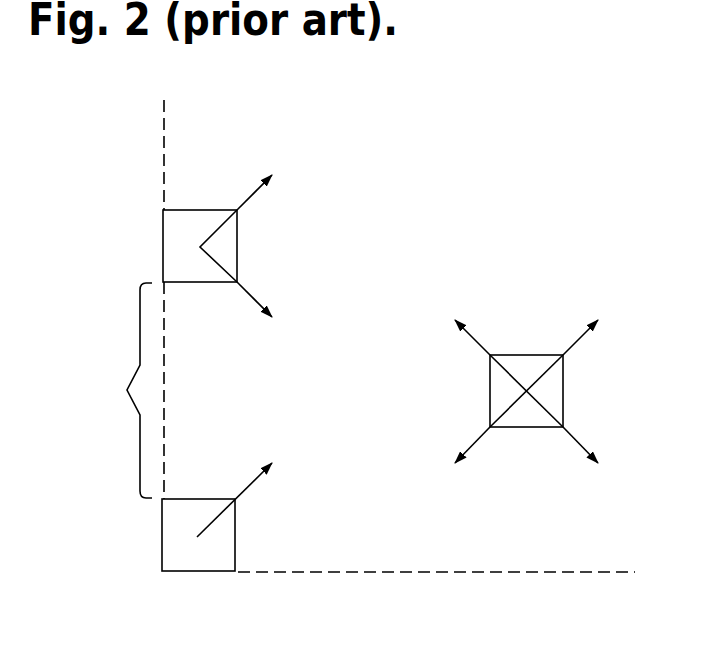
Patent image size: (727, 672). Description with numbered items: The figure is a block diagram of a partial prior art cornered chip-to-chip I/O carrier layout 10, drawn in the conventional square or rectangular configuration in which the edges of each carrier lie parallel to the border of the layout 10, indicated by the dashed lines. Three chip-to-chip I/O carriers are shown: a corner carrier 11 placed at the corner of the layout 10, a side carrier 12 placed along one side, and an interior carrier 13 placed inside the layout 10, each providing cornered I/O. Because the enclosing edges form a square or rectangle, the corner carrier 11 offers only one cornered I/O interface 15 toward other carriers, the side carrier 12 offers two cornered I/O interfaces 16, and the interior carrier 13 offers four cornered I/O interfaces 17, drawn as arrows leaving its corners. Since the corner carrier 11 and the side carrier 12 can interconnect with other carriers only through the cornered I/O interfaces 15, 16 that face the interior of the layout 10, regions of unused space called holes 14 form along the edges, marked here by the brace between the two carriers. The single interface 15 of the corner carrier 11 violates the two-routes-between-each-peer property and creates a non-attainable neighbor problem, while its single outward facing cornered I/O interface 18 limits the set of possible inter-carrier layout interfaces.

The cornered chip-to-chip I/O carrier layout 10 is at (69, 90).
The corner carrier 11 is at (162, 532).
The side carrier 12 is at (163, 243).
The interior carrier 13 is at (563, 390).
The holes 14 is at (122, 390).
The cornered I/O interface 15 is at (242, 508).
The cornered I/O interfaces 16 is at (236, 190).
The cornered I/O interfaces 17 is at (561, 341).
The outward facing cornered I/O interface 18 is at (158, 578).